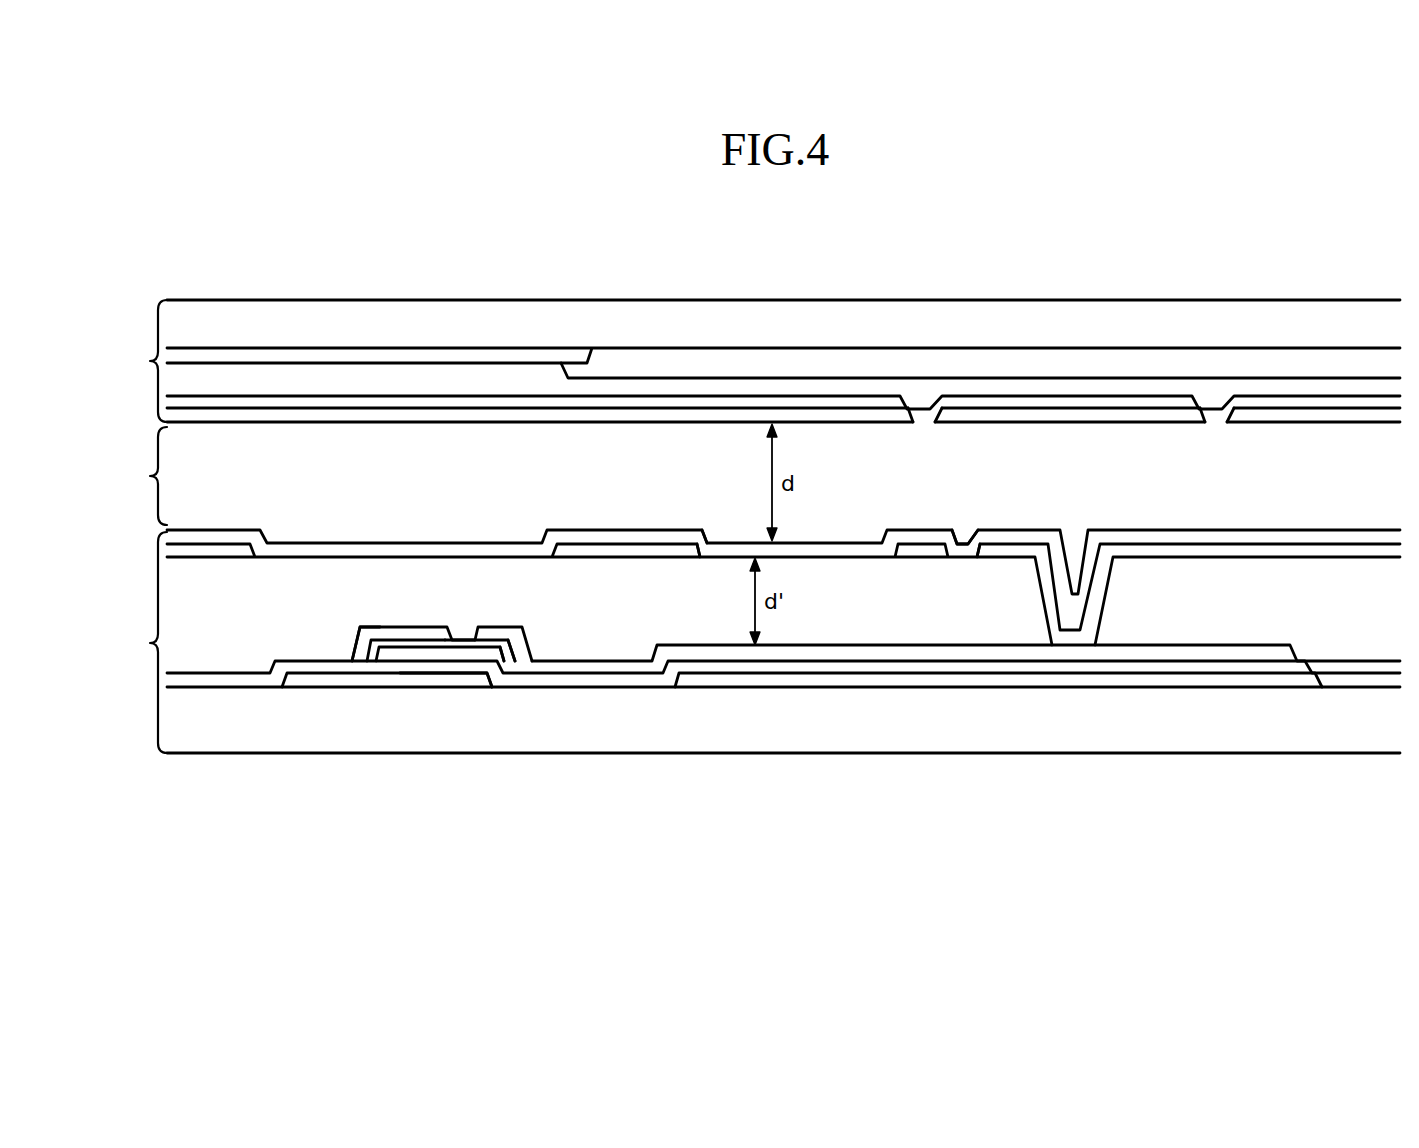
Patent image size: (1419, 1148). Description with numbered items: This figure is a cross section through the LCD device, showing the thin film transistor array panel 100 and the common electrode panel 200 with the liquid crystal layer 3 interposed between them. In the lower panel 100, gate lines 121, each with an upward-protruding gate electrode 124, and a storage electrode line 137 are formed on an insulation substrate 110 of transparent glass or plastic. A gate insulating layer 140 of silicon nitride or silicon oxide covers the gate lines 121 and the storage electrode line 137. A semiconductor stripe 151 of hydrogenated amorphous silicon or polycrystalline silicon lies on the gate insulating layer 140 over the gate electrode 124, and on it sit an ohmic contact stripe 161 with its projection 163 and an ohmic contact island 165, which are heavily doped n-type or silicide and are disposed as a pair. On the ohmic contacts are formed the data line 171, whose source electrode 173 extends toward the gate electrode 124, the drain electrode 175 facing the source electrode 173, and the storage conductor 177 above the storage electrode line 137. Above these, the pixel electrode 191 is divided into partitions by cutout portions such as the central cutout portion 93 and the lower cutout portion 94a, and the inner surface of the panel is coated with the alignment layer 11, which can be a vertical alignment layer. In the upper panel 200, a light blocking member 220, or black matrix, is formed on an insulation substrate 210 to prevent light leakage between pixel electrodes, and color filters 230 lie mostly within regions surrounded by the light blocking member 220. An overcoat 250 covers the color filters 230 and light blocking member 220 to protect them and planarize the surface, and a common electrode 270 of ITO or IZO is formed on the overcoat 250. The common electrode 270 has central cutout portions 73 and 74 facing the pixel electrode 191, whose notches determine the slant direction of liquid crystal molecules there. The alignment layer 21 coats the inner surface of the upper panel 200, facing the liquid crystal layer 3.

The common electrode panel 200 is at (132, 361).
The liquid crystal layer 3 is at (148, 476).
The thin film transistor array panel 100 is at (132, 642).
The insulation substrate 210 is at (320, 328).
The light blocking member 220 is at (498, 358).
The color filter 230 is at (833, 360).
The overcoat 250 is at (1033, 390).
The common electrode 270 is at (658, 403).
The alignment layer 21 is at (268, 421).
The central cutout portion 74 is at (913, 424).
The central cutout portion 73 is at (1203, 424).
The alignment layer 11 is at (297, 549).
The pixel electrode 191 is at (205, 550).
The lower cutout portion 94a is at (700, 540).
The central cutout portion 93 is at (977, 548).
The insulation substrate 110 is at (735, 728).
The gate line 121 is at (302, 682).
The gate electrode 124 is at (470, 683).
The storage electrode line 137 is at (920, 683).
The gate insulating layer 140 is at (228, 680).
The storage conductor 177 is at (1015, 656).
The source electrode 173 is at (436, 632).
The drain electrode 175 is at (502, 630).
The data line 171 is at (366, 640).
The semiconductor stripe 151 is at (398, 656).
The ohmic contact stripe 161 is at (380, 650).
The projection of ohmic contact stripe 163 is at (427, 650).
The ohmic contact island 165 is at (497, 650).